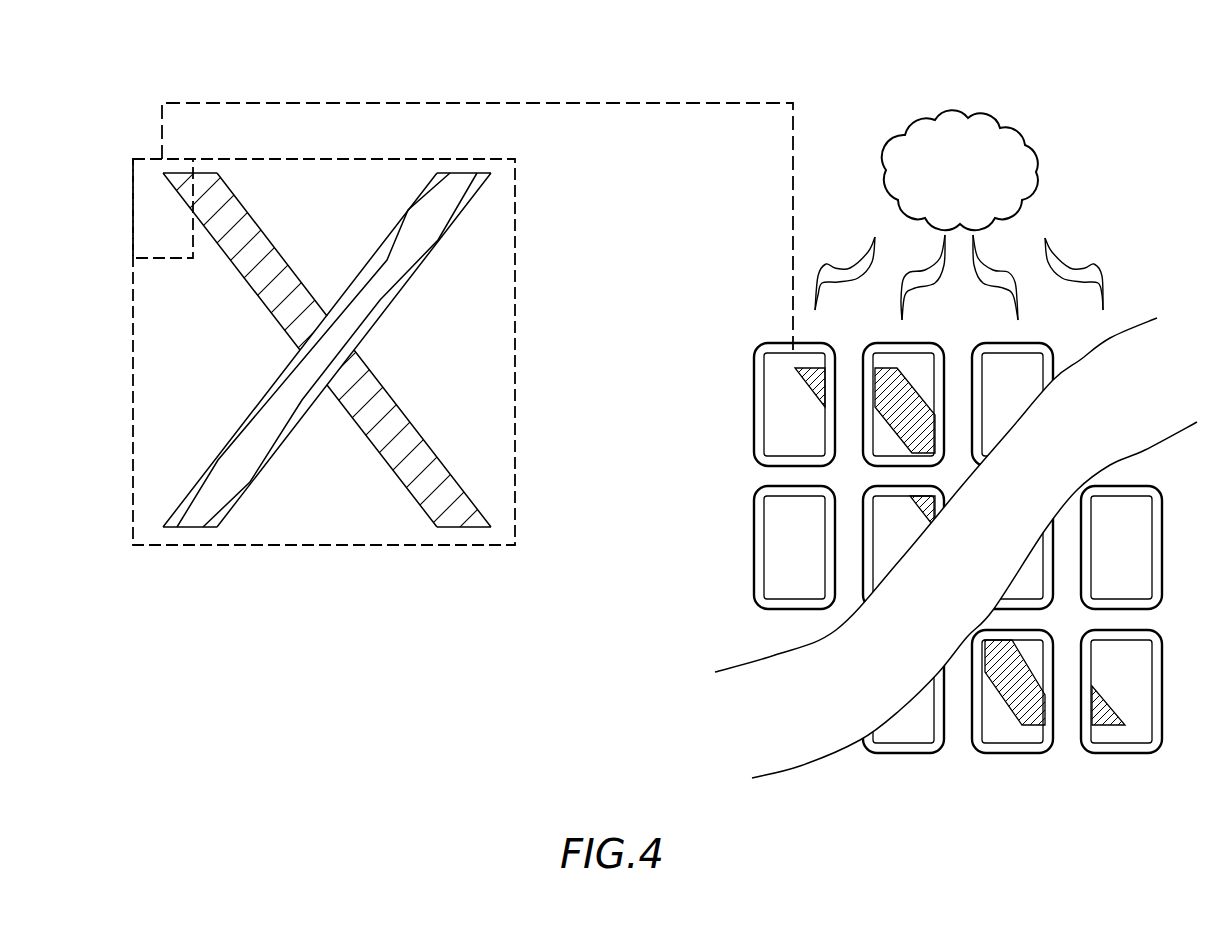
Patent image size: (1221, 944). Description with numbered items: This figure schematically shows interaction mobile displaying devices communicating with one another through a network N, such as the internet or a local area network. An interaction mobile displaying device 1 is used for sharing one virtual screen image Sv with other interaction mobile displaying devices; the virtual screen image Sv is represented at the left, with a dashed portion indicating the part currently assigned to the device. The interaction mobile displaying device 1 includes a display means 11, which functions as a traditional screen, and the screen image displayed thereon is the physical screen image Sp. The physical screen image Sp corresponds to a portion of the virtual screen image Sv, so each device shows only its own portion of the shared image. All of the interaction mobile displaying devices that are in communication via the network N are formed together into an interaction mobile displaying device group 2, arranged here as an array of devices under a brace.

The virtual screen image Sv is at (118, 134).
The network N is at (958, 137).
The interaction mobile displaying device 1 is at (760, 367).
The display means 11 is at (758, 375).
The physical screen image Sp is at (776, 414).
The interaction mobile displaying device group 2 is at (812, 523).